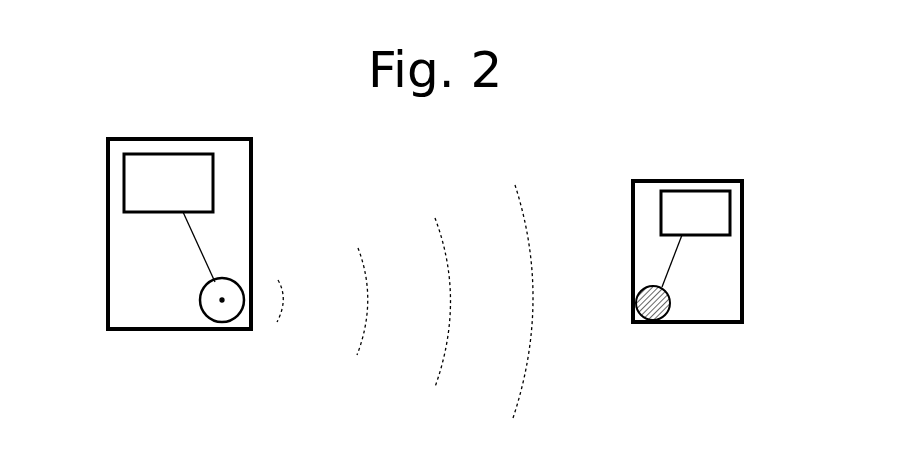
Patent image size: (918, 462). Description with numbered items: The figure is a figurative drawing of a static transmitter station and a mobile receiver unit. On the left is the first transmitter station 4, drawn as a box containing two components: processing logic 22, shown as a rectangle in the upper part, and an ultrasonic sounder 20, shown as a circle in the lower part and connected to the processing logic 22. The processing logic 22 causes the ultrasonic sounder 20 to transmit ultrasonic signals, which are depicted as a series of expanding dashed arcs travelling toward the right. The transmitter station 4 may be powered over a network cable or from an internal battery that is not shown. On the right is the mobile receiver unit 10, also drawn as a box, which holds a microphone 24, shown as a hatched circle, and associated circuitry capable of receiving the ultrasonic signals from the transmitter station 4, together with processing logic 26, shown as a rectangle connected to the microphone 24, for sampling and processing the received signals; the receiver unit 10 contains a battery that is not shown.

The first transmitter station 4 is at (106, 267).
The processing logic 22 is at (168, 170).
The ultrasonic sounder 20 is at (225, 318).
The mobile receiver unit 10 is at (743, 290).
The processing logic 26 is at (692, 205).
The microphone 24 is at (650, 320).